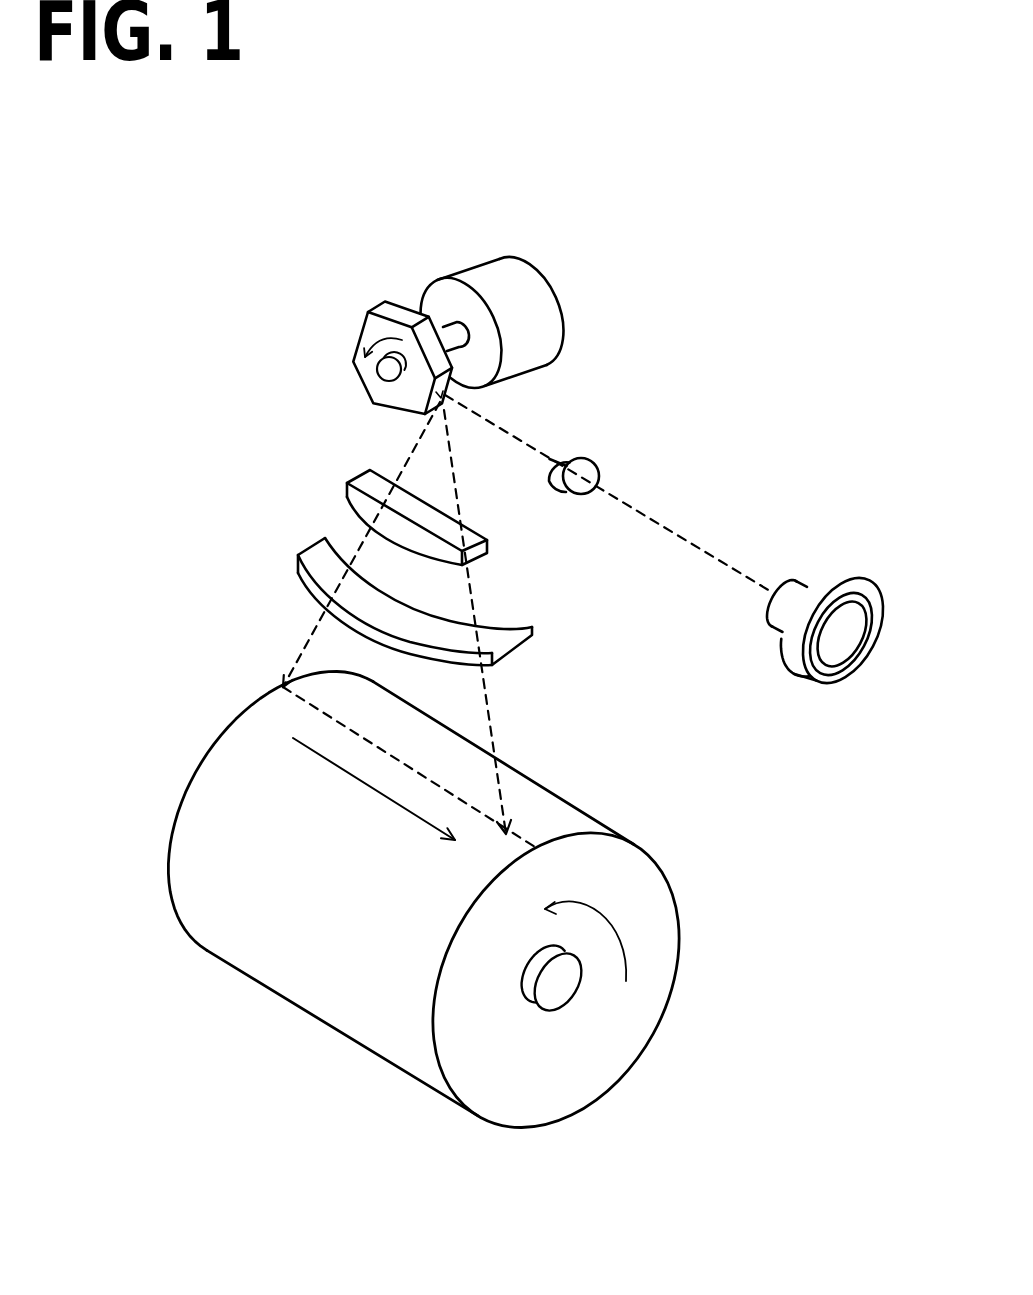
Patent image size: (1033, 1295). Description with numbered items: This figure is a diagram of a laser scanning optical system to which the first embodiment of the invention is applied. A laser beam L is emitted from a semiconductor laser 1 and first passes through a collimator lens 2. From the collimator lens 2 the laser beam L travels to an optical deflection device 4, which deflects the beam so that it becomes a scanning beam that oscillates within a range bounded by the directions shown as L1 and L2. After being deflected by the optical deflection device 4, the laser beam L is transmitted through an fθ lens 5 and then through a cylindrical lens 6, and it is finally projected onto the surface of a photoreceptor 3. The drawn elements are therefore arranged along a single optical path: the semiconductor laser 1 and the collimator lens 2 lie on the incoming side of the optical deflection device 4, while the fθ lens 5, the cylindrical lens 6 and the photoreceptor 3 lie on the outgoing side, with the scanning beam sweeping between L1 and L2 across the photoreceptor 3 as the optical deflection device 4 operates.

The semiconductor laser 1 is at (852, 578).
The collimator lens 2 is at (585, 452).
The photoreceptor 3 is at (554, 816).
The optical deflection device 4 is at (410, 290).
The fθ lens 5 is at (393, 482).
The cylindrical lens 6 is at (323, 542).
The laser beam L is at (687, 540).
The scanning beam direction L1 is at (310, 637).
The scanning beam direction L2 is at (490, 702).